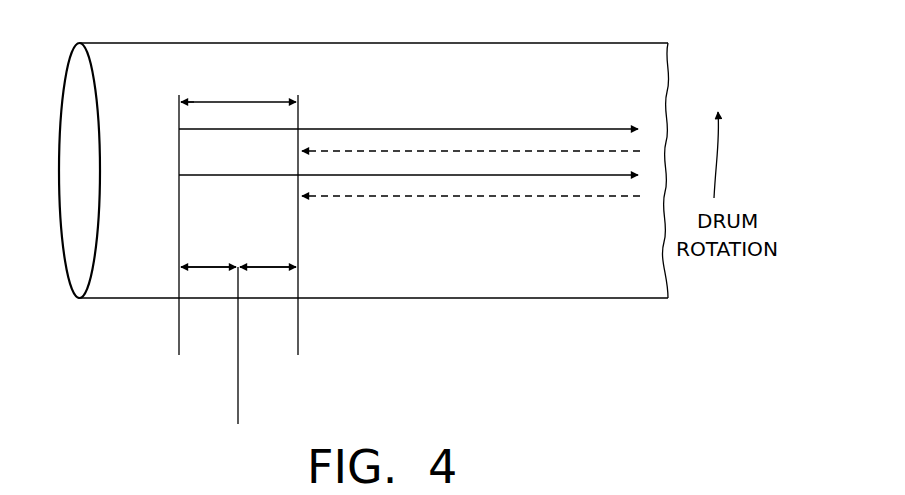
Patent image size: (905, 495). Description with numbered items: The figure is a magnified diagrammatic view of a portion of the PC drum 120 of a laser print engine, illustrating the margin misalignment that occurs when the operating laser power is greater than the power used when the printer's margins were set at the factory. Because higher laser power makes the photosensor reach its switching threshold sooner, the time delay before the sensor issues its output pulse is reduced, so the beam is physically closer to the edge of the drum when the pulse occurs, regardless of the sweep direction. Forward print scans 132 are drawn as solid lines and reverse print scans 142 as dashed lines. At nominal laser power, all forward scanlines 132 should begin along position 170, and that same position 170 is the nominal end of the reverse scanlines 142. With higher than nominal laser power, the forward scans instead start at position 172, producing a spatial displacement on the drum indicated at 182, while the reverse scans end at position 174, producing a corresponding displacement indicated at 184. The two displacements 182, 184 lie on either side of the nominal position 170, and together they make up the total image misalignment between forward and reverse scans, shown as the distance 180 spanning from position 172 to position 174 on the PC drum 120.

The PC drum 120 is at (77, 80).
The forward print scans 132 is at (448, 175).
The reverse print scans 142 is at (590, 152).
The nominal scan position 170 is at (238, 410).
The start position of forward scans at higher laser power 172 is at (178, 332).
The end position of reverse scans at higher laser power 174 is at (298, 338).
The total image misalignment distance 180 is at (225, 101).
The forward scan spatial displacement 182 is at (205, 265).
The reverse scan spatial displacement 184 is at (268, 266).